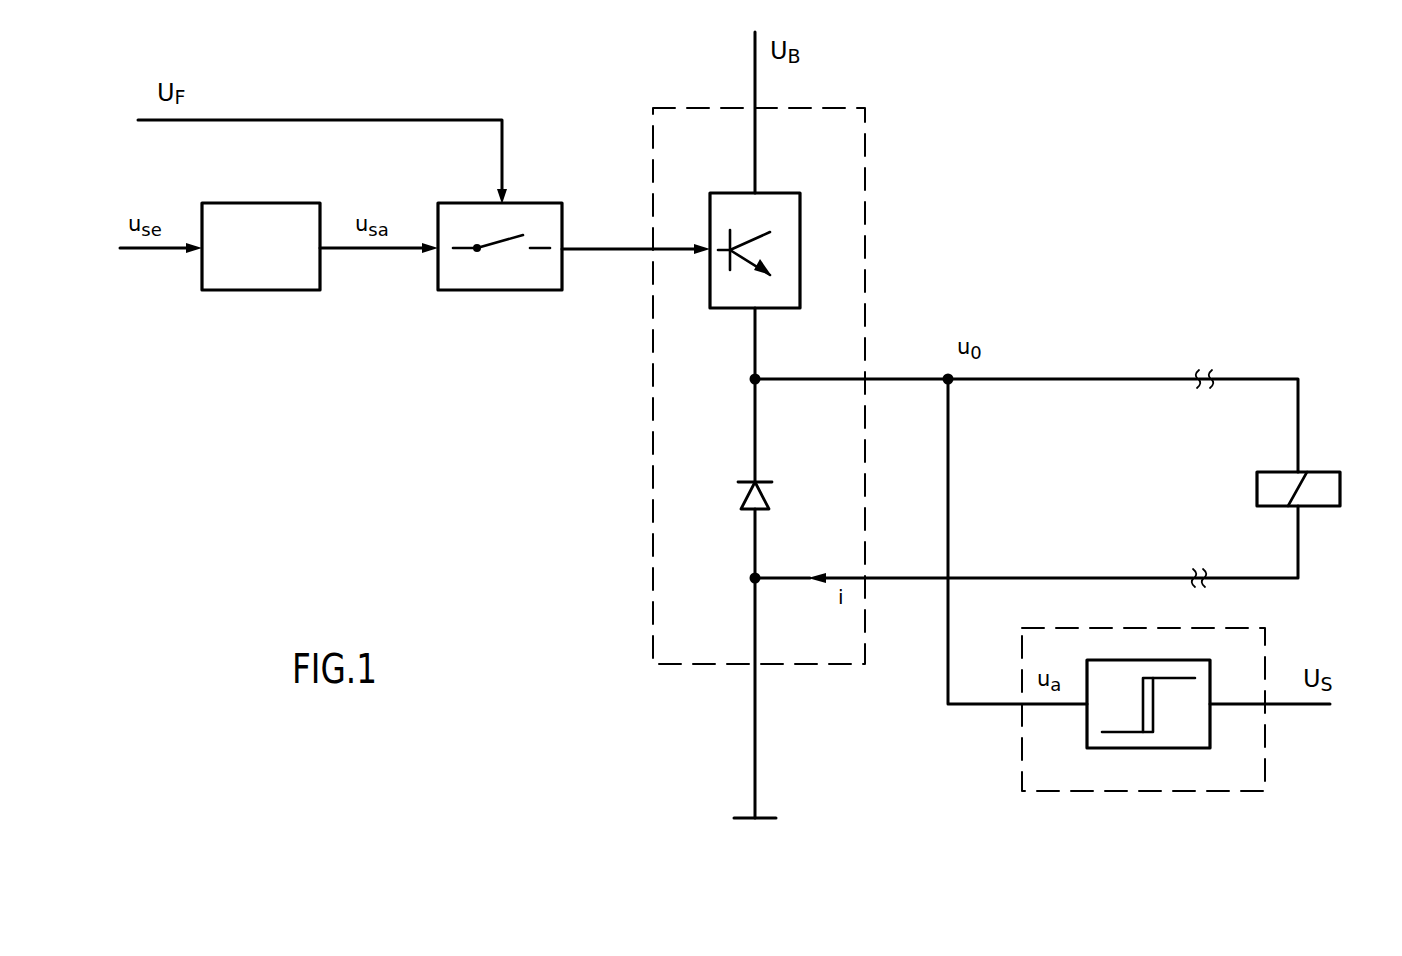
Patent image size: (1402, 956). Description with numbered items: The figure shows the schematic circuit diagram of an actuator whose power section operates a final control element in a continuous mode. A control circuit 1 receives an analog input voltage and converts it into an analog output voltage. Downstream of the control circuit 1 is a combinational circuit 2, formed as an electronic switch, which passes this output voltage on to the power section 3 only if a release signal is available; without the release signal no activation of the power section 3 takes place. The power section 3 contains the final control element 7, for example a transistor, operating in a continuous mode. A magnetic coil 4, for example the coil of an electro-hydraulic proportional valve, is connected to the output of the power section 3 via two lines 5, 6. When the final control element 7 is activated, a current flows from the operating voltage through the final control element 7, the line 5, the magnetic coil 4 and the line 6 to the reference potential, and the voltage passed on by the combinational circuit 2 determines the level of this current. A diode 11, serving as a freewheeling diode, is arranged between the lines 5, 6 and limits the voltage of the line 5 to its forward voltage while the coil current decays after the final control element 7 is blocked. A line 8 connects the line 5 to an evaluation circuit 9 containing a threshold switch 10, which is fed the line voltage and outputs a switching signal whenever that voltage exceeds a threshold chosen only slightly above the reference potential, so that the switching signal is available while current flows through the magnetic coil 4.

The control circuit 1 is at (263, 291).
The combinational circuit 2 is at (487, 291).
The power section 3 is at (866, 192).
The magnetic coil 4 is at (1322, 472).
The line 5 is at (1112, 381).
The line 6 is at (1082, 578).
The final control element 7 is at (728, 309).
The line 8 is at (948, 622).
The evaluation circuit 9 is at (1265, 777).
The threshold switch 10 is at (1128, 748).
The diode 11 is at (744, 512).